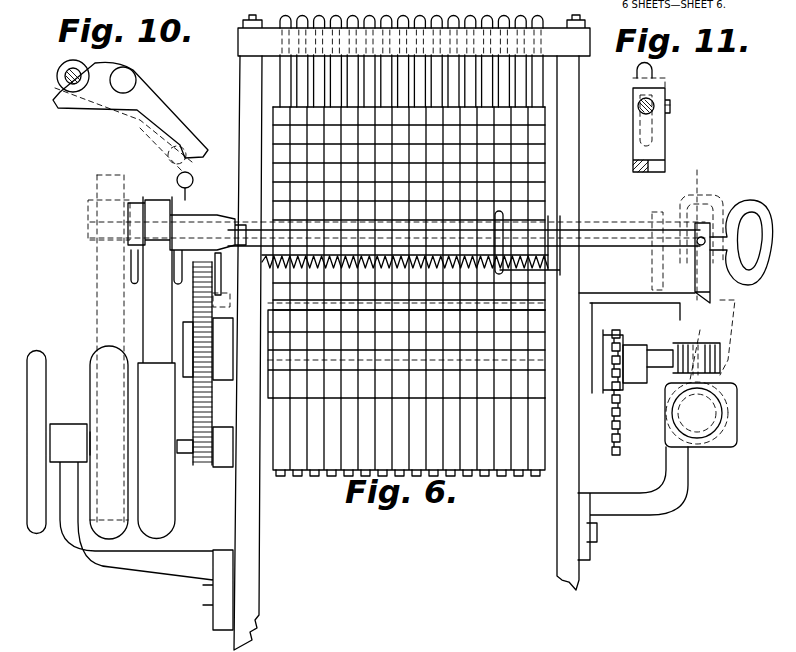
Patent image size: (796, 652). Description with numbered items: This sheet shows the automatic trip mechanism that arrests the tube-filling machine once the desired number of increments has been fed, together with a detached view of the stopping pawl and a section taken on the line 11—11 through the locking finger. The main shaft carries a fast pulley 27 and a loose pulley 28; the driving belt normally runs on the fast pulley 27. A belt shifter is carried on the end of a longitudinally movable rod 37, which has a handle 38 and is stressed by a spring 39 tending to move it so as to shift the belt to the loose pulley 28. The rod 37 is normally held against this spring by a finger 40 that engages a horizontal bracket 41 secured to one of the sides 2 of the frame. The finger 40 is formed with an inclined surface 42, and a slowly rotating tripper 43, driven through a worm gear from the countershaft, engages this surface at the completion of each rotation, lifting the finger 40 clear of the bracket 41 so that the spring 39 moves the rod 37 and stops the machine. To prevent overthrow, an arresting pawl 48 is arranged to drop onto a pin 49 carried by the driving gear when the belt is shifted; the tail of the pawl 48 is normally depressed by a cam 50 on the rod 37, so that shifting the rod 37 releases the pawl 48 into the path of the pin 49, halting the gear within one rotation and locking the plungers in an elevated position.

In FIG. 6, the sides 2 is at (575, 463).
In FIG. 6, the section line 11— 11 is at (684, 318).
In FIG. 6, the fast pulley 27 is at (177, 495).
In FIG. 6, the loose pulley 28 is at (108, 515).
In FIG. 6, the rod 37 is at (617, 230).
In FIG. 6, the handle 38 is at (753, 206).
In FIG. 6, the spring 39 is at (493, 245).
In FIG. 6, the finger 40 is at (708, 275).
In FIG. 6, the horizontal bracket 41 is at (617, 293).
In FIG. 11, the inclined surface 42 is at (652, 167).
In FIG. 6, the tripper 43 is at (717, 327).
In FIG. 10, the arresting pawl 48 is at (167, 107).
In FIG. 10, the pin 49 is at (193, 178).
In FIG. 6, the cam 50 is at (203, 224).
In FIG. 10, the cam 50 is at (88, 70).